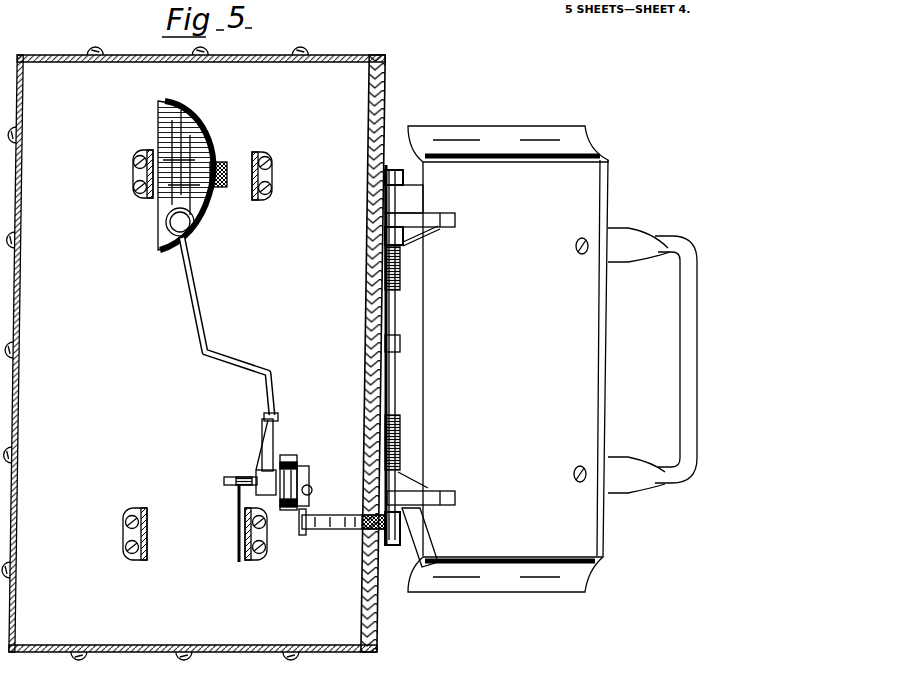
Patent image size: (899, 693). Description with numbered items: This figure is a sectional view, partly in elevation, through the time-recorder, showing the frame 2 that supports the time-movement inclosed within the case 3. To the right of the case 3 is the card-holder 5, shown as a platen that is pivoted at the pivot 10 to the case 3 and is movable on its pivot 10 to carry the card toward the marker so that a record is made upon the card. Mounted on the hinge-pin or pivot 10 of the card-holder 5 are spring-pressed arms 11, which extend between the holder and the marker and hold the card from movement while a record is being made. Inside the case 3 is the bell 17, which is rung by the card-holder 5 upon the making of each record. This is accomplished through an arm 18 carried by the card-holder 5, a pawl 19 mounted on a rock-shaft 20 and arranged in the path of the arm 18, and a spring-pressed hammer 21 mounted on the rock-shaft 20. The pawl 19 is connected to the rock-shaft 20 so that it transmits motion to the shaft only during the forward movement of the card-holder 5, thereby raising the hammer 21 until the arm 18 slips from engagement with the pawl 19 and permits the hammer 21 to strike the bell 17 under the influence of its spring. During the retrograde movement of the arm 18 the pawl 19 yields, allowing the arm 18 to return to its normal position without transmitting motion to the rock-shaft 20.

The frame 2 is at (241, 553).
The case 3 is at (21, 312).
The card-holder 5 is at (542, 356).
The pivot 10 is at (400, 320).
The spring-pressed arms 11 is at (447, 218).
The bell 17 is at (205, 205).
The arm 18 is at (323, 531).
The pawl 19 is at (307, 505).
The rock-shaft 20 is at (222, 489).
The spring-pressed hammer 21 is at (204, 320).